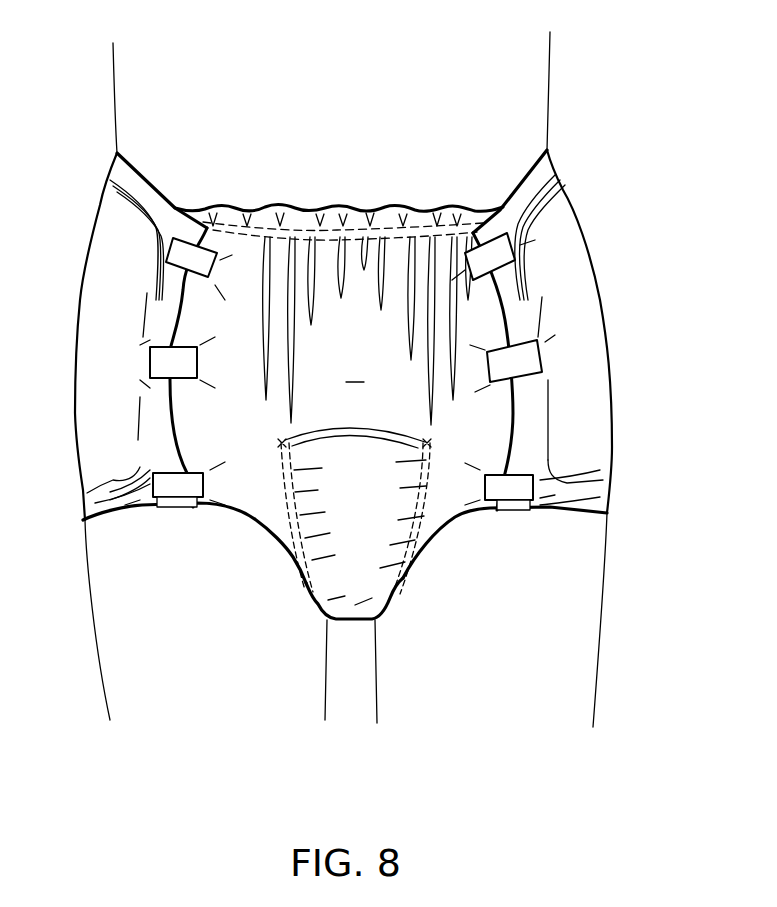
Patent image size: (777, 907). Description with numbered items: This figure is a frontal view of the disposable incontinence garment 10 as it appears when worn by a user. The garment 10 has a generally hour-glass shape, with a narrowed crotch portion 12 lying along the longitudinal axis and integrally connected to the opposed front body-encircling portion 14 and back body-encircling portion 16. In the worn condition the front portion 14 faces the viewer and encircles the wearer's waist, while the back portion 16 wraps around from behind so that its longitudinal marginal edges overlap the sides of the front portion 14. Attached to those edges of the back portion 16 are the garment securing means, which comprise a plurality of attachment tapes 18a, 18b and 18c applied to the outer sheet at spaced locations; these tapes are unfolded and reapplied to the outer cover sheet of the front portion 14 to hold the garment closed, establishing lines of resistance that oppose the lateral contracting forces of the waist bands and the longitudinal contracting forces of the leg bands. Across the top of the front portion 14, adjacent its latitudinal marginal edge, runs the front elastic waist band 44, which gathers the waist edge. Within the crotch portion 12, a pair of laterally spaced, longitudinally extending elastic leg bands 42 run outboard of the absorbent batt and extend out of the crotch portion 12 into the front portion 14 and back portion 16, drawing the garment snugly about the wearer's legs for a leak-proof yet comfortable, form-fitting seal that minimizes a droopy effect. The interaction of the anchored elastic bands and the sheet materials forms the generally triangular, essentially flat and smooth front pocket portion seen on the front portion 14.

The disposable garment 10 is at (605, 217).
The crotch portion 12 is at (365, 592).
The front body-encircling portion 14 is at (438, 205).
The back body-encircling portion 16 is at (133, 163).
The attachment tape 18a is at (185, 257).
The attachment tape 18b is at (160, 360).
The attachment tape 18c is at (173, 480).
The elastic leg bands 42 is at (287, 555).
The front elastic waist band 44 is at (225, 227).